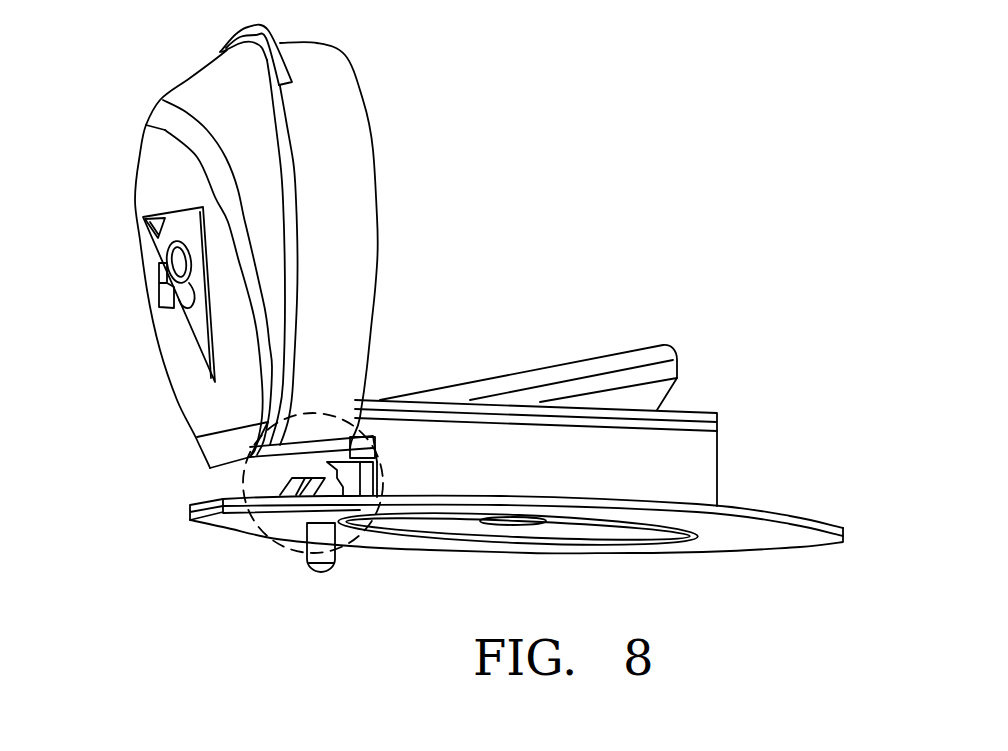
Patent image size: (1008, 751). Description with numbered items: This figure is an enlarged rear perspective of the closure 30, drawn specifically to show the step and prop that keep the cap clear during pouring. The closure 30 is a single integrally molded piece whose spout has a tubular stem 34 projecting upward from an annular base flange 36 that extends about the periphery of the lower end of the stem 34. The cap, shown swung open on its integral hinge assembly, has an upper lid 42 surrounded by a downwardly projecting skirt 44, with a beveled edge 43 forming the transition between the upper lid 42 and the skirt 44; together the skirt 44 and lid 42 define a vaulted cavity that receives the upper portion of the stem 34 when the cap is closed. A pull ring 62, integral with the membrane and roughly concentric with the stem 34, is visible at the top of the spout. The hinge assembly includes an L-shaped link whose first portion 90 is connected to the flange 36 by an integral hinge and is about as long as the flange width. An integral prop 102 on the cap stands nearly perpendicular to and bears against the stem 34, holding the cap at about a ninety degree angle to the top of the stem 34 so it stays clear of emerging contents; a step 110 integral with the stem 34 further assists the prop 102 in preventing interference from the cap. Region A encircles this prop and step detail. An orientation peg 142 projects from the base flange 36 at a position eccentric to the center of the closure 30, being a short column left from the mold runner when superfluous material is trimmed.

The closure 30 is at (507, 201).
The stem 34 is at (622, 475).
The base flange 36 is at (845, 530).
The upper lid 42 is at (137, 181).
The beveled edge 43 is at (210, 60).
The skirt 44 is at (346, 178).
The pull ring 62 is at (667, 343).
The first portion 90 is at (205, 498).
The prop 102 is at (352, 438).
The step 110 is at (372, 476).
The orientation peg 142 is at (317, 573).
The detail region A is at (344, 548).